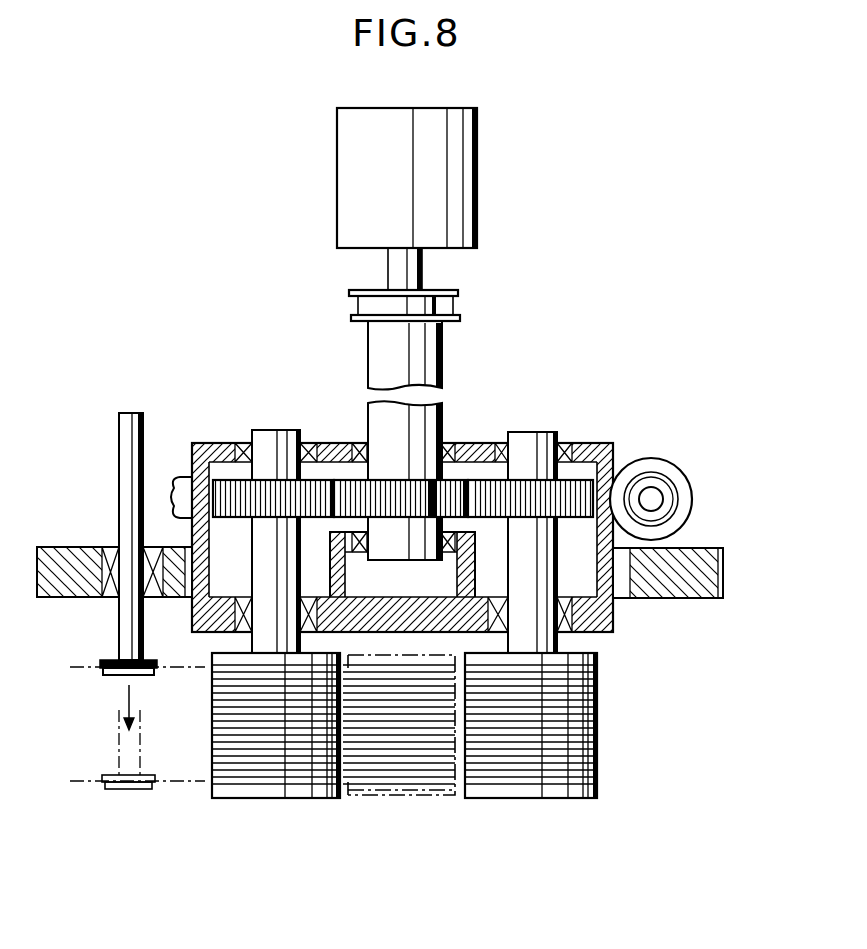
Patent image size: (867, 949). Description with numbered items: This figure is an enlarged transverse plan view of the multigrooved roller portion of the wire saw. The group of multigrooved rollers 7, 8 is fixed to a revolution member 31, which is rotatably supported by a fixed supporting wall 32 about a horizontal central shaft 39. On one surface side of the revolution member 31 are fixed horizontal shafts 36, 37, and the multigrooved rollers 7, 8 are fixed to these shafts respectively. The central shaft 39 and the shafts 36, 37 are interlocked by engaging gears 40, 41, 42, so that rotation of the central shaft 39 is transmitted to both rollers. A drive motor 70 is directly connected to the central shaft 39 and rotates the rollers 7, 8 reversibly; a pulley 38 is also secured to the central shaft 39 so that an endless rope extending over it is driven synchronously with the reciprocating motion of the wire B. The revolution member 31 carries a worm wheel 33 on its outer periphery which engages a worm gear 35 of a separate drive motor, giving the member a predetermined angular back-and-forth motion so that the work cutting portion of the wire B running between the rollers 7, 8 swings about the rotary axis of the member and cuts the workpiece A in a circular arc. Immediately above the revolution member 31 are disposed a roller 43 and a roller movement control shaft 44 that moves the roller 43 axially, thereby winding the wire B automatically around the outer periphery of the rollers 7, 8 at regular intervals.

The drive motor 70 is at (465, 185).
The pulley 38 is at (458, 305).
The central shaft 39 is at (380, 422).
The horizontal shaft 37 is at (272, 437).
The horizontal shaft 36 is at (529, 440).
The gear 42 is at (230, 490).
The gear 40 is at (440, 492).
The gear 41 is at (572, 497).
The worm wheel 33 is at (623, 488).
The worm gear 35 is at (680, 490).
The fixed supporting wall 32 is at (708, 568).
The revolution member 31 is at (615, 624).
The roller movement control shaft 44 is at (127, 472).
The roller 43 is at (115, 678).
The multigrooved roller 7 is at (272, 798).
The multigrooved roller 8 is at (523, 798).
The workpiece A is at (430, 795).
The wire B is at (373, 795).